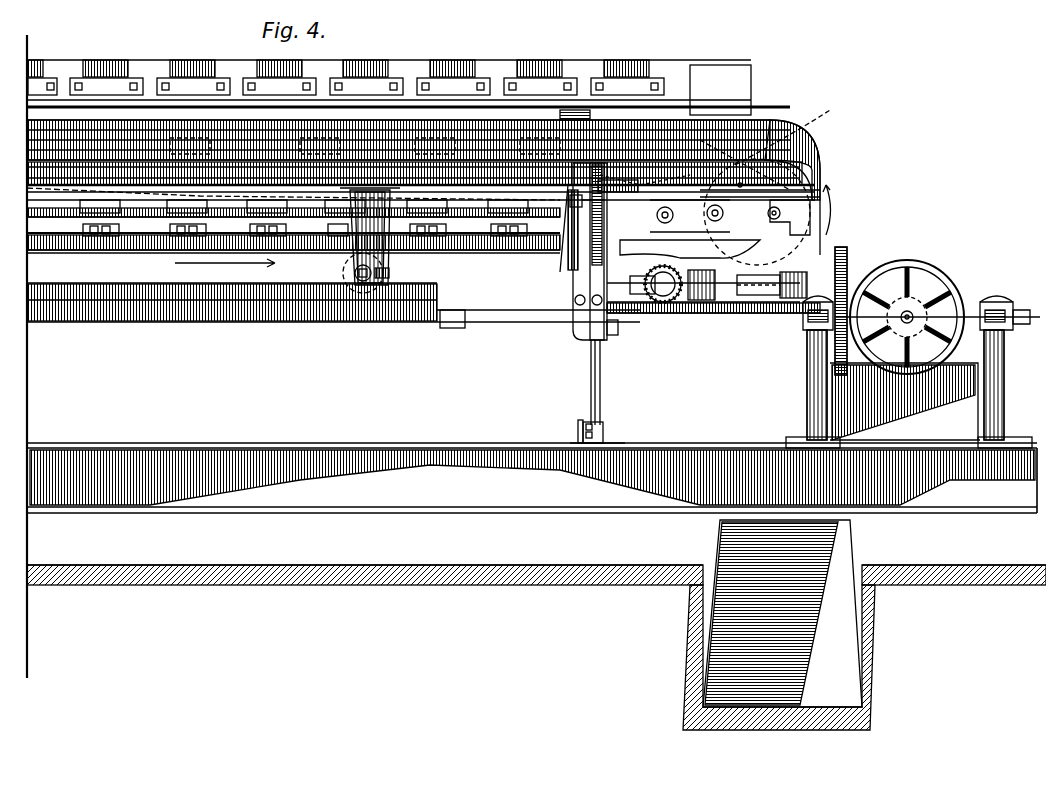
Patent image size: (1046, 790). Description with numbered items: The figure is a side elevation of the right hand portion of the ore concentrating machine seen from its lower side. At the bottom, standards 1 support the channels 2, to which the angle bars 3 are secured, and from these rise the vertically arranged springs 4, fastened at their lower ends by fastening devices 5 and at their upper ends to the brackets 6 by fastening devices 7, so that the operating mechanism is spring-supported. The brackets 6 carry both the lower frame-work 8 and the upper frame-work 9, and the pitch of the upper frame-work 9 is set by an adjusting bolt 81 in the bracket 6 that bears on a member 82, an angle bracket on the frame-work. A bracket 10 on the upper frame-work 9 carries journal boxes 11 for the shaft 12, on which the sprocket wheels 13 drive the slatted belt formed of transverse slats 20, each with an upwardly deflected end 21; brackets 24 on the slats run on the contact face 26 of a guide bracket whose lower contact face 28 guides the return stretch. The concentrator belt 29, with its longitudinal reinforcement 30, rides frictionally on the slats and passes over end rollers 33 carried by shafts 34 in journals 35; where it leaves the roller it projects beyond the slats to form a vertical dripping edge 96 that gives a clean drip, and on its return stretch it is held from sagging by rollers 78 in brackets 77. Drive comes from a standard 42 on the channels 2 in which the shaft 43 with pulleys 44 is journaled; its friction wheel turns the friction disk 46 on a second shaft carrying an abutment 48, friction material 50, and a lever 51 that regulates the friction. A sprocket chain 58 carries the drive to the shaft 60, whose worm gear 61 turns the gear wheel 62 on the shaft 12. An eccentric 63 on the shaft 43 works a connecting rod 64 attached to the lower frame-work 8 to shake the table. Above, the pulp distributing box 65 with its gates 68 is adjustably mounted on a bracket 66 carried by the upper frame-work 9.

The standards 1 is at (805, 548).
The channels 2 is at (532, 478).
The brackets or angle bars 3 is at (573, 436).
The springs 4 is at (590, 375).
The fastening devices 5 is at (603, 428).
The brackets 6 is at (575, 310).
The fastening devices 7 is at (612, 335).
The lower frame-work 8 is at (200, 300).
The upper frame-work 9 is at (605, 178).
The bracket 10 is at (805, 222).
The journal boxes 11 is at (752, 130).
The shaft 12 is at (770, 186).
The sprocket wheels 13 is at (690, 118).
The slats 20 is at (88, 132).
The upwardly deflected end 21 is at (440, 206).
The brackets 24 is at (83, 240).
The contact face 26 is at (130, 238).
The contact face 28 is at (225, 272).
The concentrator belt 29 is at (228, 133).
The reinforcement 30 is at (140, 120).
The end rollers 33 is at (808, 262).
The shafts 34 is at (832, 188).
The journals 35 is at (822, 162).
The standard 42 is at (808, 418).
The shaft 43 is at (930, 282).
The pulleys 44 is at (948, 304).
The friction disk 46 is at (880, 246).
The abutment 48 is at (1029, 313).
The friction material 50 is at (1000, 305).
The lever 51 is at (960, 372).
The sprocket chain 58 is at (855, 310).
The shaft 60 is at (768, 296).
The worm gear 61 is at (665, 304).
The gear wheel 62 is at (705, 300).
The eccentric 63 is at (875, 262).
The connecting rod 64 is at (702, 308).
The pulp distributing box 65 is at (494, 70).
The bracket 66 is at (570, 118).
The gates 68 is at (380, 83).
The brackets 77 is at (370, 236).
The rollers 78 is at (345, 273).
The adjusting bolt 81 is at (580, 255).
The member 82 is at (570, 200).
The vertical dripping edge 96 is at (480, 152).